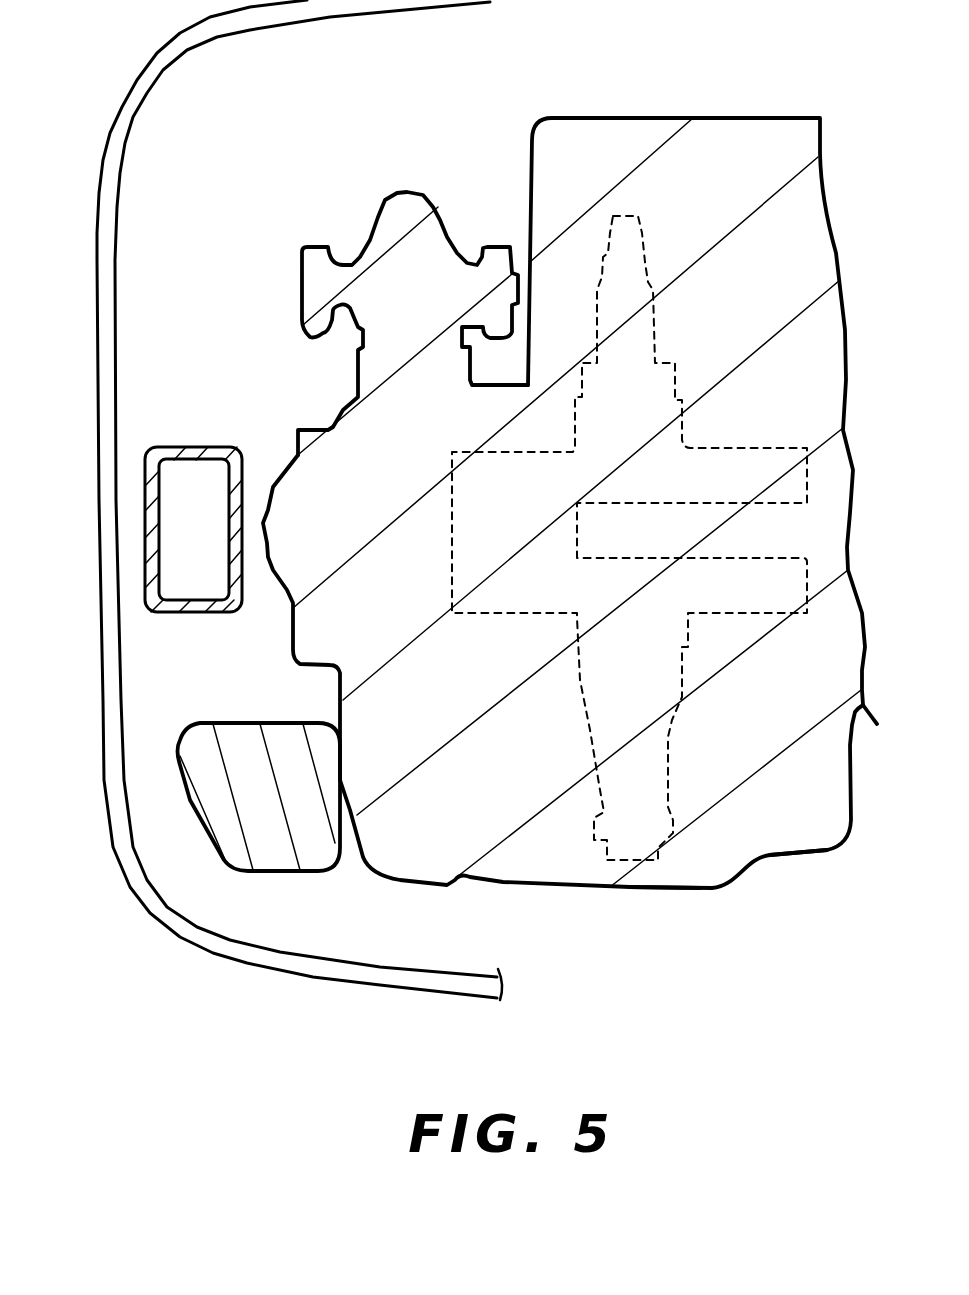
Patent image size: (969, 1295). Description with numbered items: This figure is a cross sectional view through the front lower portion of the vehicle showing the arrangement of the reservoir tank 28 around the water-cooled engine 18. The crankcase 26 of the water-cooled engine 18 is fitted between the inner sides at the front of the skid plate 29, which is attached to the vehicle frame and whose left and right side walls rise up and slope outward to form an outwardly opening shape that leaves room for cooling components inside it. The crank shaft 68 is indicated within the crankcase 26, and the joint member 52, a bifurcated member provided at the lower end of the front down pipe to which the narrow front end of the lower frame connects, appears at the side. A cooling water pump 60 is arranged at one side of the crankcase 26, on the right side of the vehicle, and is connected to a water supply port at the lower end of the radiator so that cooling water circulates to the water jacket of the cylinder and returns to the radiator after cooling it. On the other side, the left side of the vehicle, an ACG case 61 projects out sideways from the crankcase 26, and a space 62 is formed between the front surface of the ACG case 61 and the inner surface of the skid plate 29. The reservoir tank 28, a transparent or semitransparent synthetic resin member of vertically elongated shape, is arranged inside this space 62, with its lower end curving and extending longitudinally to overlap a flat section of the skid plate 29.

The water-cooled engine 18 is at (713, 110).
The crankcase 26 is at (765, 848).
The reservoir tank 28 is at (220, 858).
The skid plate 29 is at (293, 970).
The joint member 52 is at (187, 447).
The cooling water pump 60 is at (405, 187).
The ACG case 61 is at (665, 893).
The space 62 is at (162, 697).
The crank shaft 68 is at (607, 840).